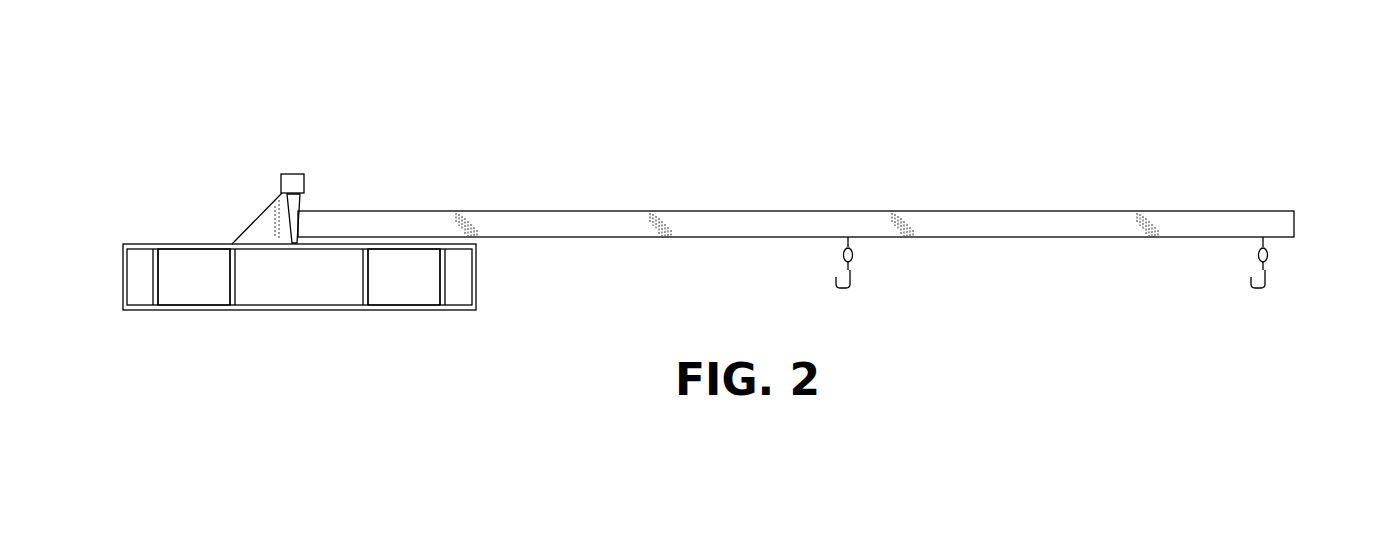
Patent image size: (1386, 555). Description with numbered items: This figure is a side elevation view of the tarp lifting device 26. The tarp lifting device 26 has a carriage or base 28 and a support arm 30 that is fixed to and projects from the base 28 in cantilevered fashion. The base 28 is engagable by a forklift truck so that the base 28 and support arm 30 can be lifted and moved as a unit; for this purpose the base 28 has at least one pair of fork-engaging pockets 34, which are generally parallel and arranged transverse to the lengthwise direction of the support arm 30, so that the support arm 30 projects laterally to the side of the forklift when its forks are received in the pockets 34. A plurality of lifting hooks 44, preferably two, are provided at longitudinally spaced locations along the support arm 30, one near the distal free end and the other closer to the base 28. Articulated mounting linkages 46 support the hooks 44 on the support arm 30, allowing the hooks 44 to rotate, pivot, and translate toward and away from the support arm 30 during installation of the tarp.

The tarp lifting device 26 is at (736, 200).
The base 28 is at (215, 244).
The support arm 30 is at (1120, 211).
The fork-engaging pockets 34 is at (190, 290).
The lifting hooks 44 is at (852, 278).
The articulated mounting linkages 46 is at (857, 253).